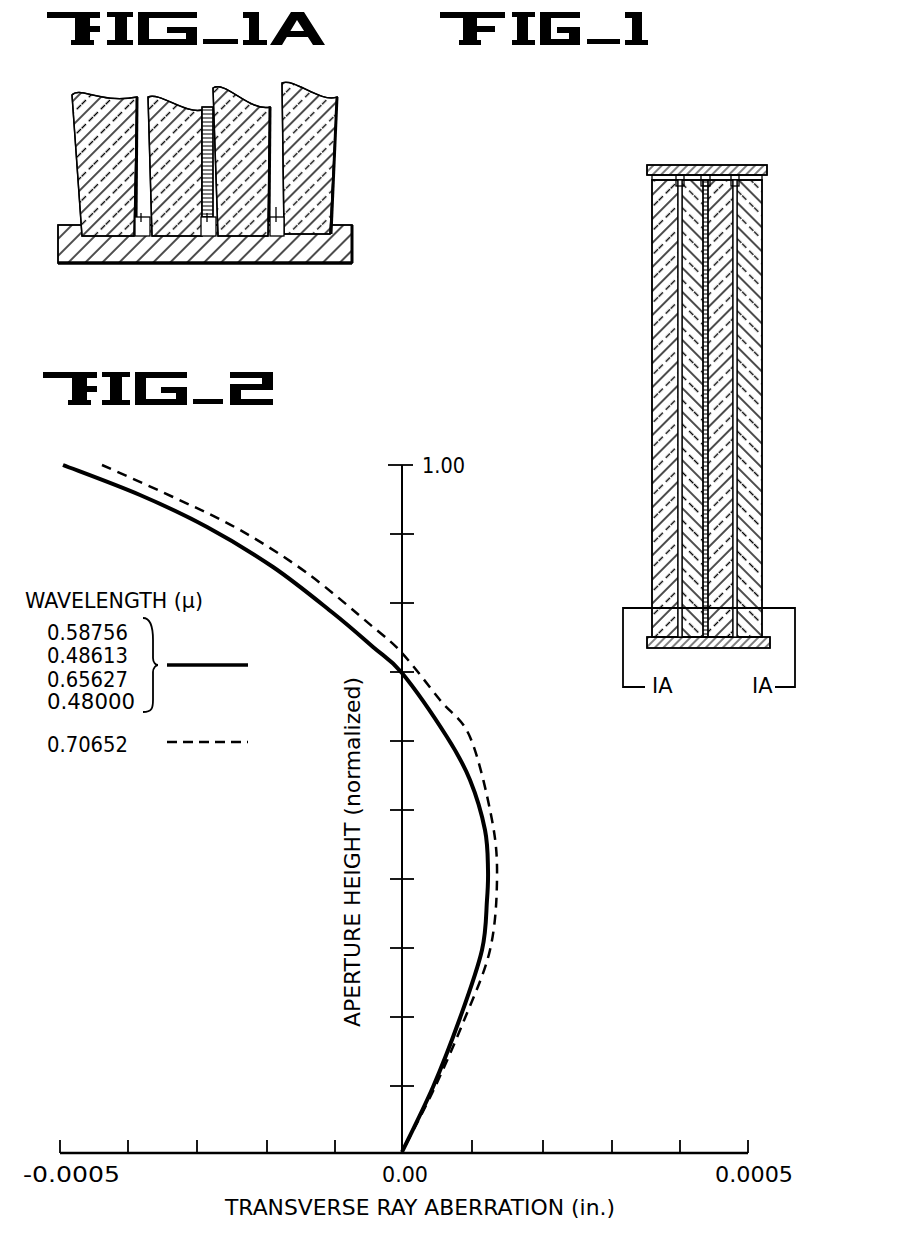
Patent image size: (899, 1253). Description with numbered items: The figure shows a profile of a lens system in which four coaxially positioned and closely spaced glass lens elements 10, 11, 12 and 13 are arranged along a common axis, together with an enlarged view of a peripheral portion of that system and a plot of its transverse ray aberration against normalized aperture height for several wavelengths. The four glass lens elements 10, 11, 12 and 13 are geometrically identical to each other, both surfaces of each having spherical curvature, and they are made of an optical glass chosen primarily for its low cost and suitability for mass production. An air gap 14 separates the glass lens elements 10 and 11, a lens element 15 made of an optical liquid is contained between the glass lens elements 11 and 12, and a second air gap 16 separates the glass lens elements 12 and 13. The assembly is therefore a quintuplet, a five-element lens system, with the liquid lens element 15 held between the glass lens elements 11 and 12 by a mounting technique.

In FIG. 1A, the glass lens element 10 is at (82, 130).
In FIG. 1, the glass lens element 10 is at (662, 235).
In FIG. 1A, the glass lens element 11 is at (163, 173).
In FIG. 1, the glass lens element 11 is at (695, 288).
In FIG. 1A, the glass lens element 12 is at (237, 134).
In FIG. 1, the glass lens element 12 is at (723, 255).
In FIG. 1A, the glass lens element 13 is at (312, 185).
In FIG. 1, the glass lens element 13 is at (748, 300).
In FIG. 1A, the air gap 14 is at (143, 213).
In FIG. 1, the air gap 14 is at (680, 176).
In FIG. 1A, the liquid lens element 15 is at (207, 213).
In FIG. 1, the liquid lens element 15 is at (705, 176).
In FIG. 1A, the air gap 16 is at (275, 207).
In FIG. 1, the air gap 16 is at (736, 176).